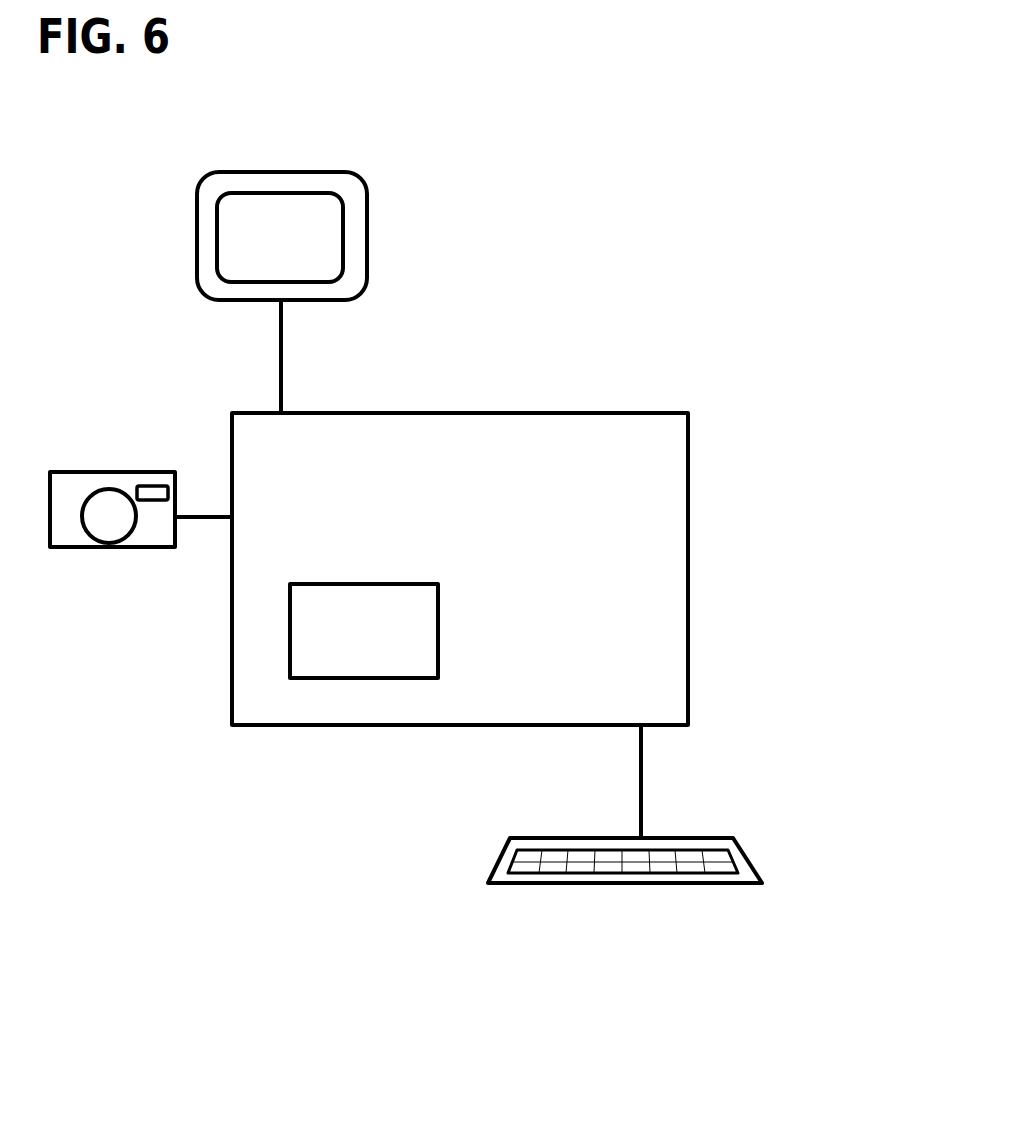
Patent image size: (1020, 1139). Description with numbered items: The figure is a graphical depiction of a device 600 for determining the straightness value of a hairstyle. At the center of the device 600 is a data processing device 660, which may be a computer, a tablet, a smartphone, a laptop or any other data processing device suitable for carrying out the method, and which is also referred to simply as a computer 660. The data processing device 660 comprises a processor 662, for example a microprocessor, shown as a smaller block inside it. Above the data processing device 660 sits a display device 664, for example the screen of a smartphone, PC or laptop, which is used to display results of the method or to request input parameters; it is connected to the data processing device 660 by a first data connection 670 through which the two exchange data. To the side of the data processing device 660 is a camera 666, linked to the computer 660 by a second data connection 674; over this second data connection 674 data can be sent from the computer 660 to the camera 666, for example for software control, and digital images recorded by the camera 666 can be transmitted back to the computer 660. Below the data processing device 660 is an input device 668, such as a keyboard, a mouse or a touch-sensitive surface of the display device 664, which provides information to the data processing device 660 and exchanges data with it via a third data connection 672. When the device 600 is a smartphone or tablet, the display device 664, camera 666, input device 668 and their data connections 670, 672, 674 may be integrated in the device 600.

The device 600 is at (793, 170).
The data processing device 660 is at (517, 413).
The processor 662 is at (393, 678).
The display device 664 is at (367, 257).
The camera 666 is at (137, 547).
The input device 668 is at (617, 883).
The first data connection 670 is at (281, 390).
The third data connection 672 is at (643, 828).
The second data connection 674 is at (210, 517).